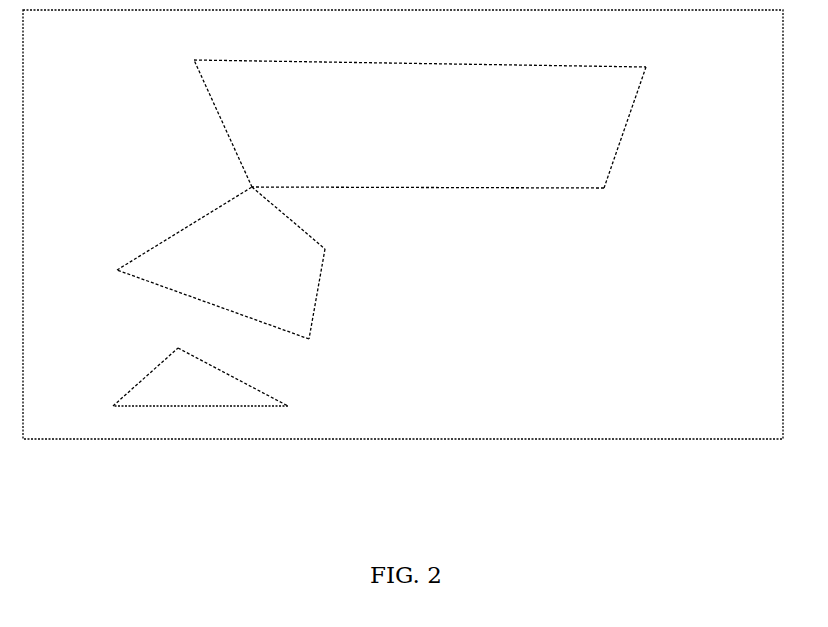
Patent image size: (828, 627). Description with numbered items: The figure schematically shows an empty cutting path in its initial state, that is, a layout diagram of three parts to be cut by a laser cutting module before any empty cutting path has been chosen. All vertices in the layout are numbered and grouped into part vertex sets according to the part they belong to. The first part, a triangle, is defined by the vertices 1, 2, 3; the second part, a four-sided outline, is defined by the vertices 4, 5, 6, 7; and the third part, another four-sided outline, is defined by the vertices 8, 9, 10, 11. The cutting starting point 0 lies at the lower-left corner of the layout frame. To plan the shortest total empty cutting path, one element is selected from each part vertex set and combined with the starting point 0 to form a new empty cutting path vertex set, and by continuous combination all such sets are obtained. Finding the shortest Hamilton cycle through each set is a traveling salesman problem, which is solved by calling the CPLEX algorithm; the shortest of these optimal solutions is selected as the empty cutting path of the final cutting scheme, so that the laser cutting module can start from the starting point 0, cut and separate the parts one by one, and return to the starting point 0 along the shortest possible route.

The starting point 0 is at (403, 224).
The vertex of part 1 is at (202, 372).
The vertex of part (1) 2 is at (220, 266).
The vertex of part (1) 3 is at (422, 127).
The vertex of part (2) 4 is at (177, 233).
The vertex of part (2) 5 is at (219, 308).
The vertex of part (2) 6 is at (323, 290).
The vertex of part (2) 7 is at (284, 218).
The vertex of part (3) 8 is at (228, 123).
The vertex of part (3) 9 is at (430, 194).
The vertex of part (3) 10 is at (636, 123).
The vertex of part (3) 11 is at (411, 60).